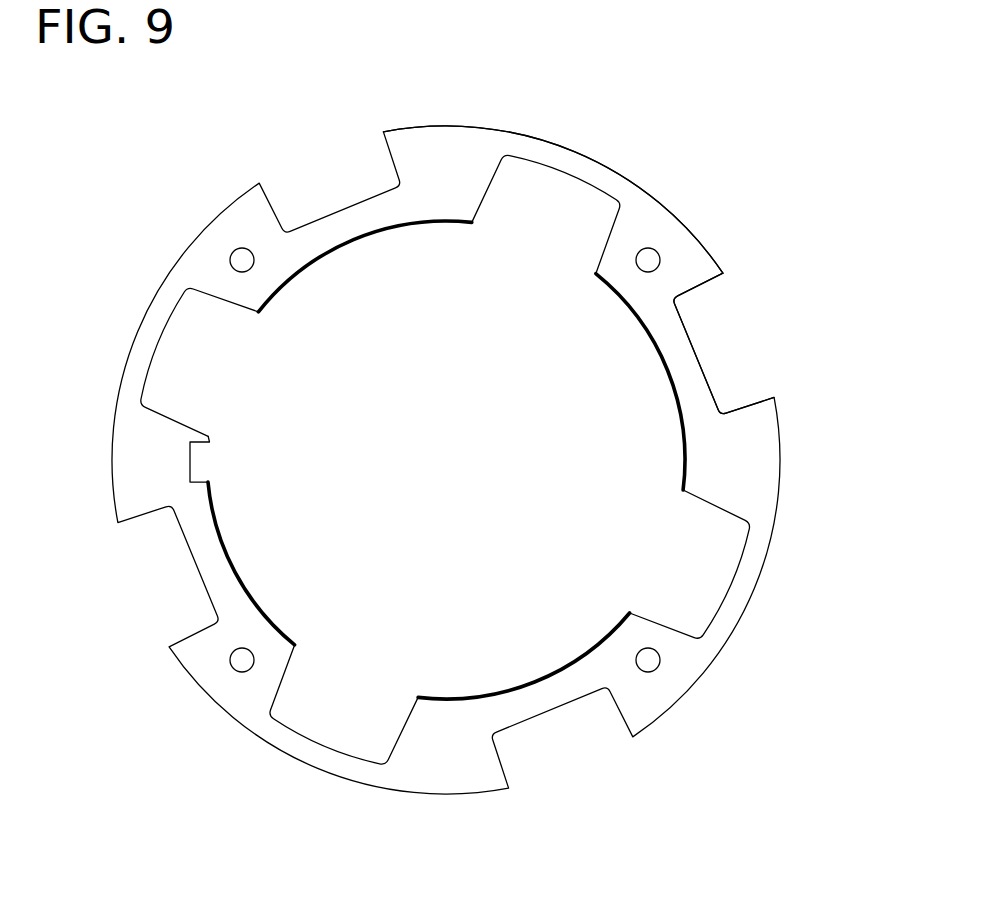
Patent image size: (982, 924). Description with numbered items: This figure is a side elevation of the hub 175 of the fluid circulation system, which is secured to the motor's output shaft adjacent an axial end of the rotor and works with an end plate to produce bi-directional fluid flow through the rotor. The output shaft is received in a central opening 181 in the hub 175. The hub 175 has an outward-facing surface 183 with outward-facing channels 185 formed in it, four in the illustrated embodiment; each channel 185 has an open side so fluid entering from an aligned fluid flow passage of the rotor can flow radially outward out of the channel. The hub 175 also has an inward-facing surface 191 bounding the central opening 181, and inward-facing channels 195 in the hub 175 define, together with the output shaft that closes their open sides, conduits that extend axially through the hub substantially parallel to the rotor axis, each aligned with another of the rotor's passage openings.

The hub 175 is at (197, 198).
The central opening 181 is at (387, 432).
The outward-facing surface 183 is at (497, 127).
The outward-facing channel 185 is at (703, 338).
The inward-facing surface 191 is at (575, 664).
The inward-facing channel 195 is at (680, 592).